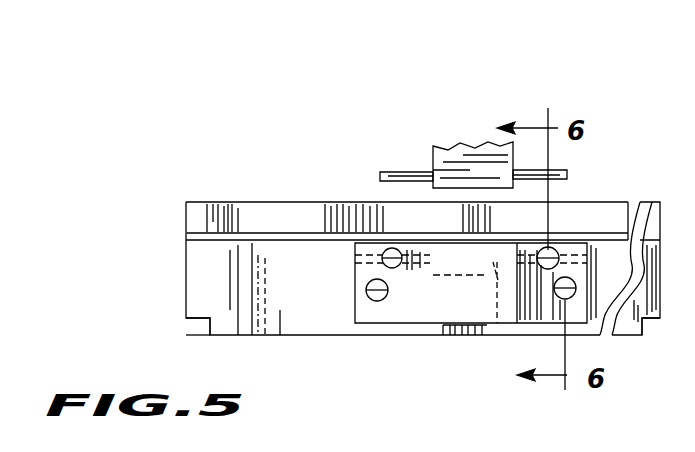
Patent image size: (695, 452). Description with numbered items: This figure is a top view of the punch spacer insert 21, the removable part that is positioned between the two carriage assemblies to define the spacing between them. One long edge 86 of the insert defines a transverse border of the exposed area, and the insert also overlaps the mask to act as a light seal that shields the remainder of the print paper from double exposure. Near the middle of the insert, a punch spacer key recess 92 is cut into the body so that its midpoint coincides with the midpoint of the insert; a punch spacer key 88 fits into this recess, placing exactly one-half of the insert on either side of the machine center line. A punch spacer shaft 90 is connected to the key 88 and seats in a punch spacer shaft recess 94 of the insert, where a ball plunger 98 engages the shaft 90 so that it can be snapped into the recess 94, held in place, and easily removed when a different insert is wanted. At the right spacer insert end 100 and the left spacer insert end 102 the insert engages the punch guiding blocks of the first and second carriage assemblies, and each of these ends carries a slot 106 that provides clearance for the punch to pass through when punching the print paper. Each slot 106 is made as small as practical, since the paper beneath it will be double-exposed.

The punch spacer insert 21 is at (347, 342).
The edge 86 is at (462, 338).
The punch spacer key 88 is at (473, 152).
The punch spacer shaft 90 is at (402, 172).
The punch spacer key recess 92 is at (497, 325).
The punch spacer shaft recess 94 is at (428, 268).
The ball plunger 98 is at (383, 262).
The right spacer insert end 100 is at (664, 214).
The left spacer insert end 102 is at (186, 250).
The slot 106 is at (207, 330).